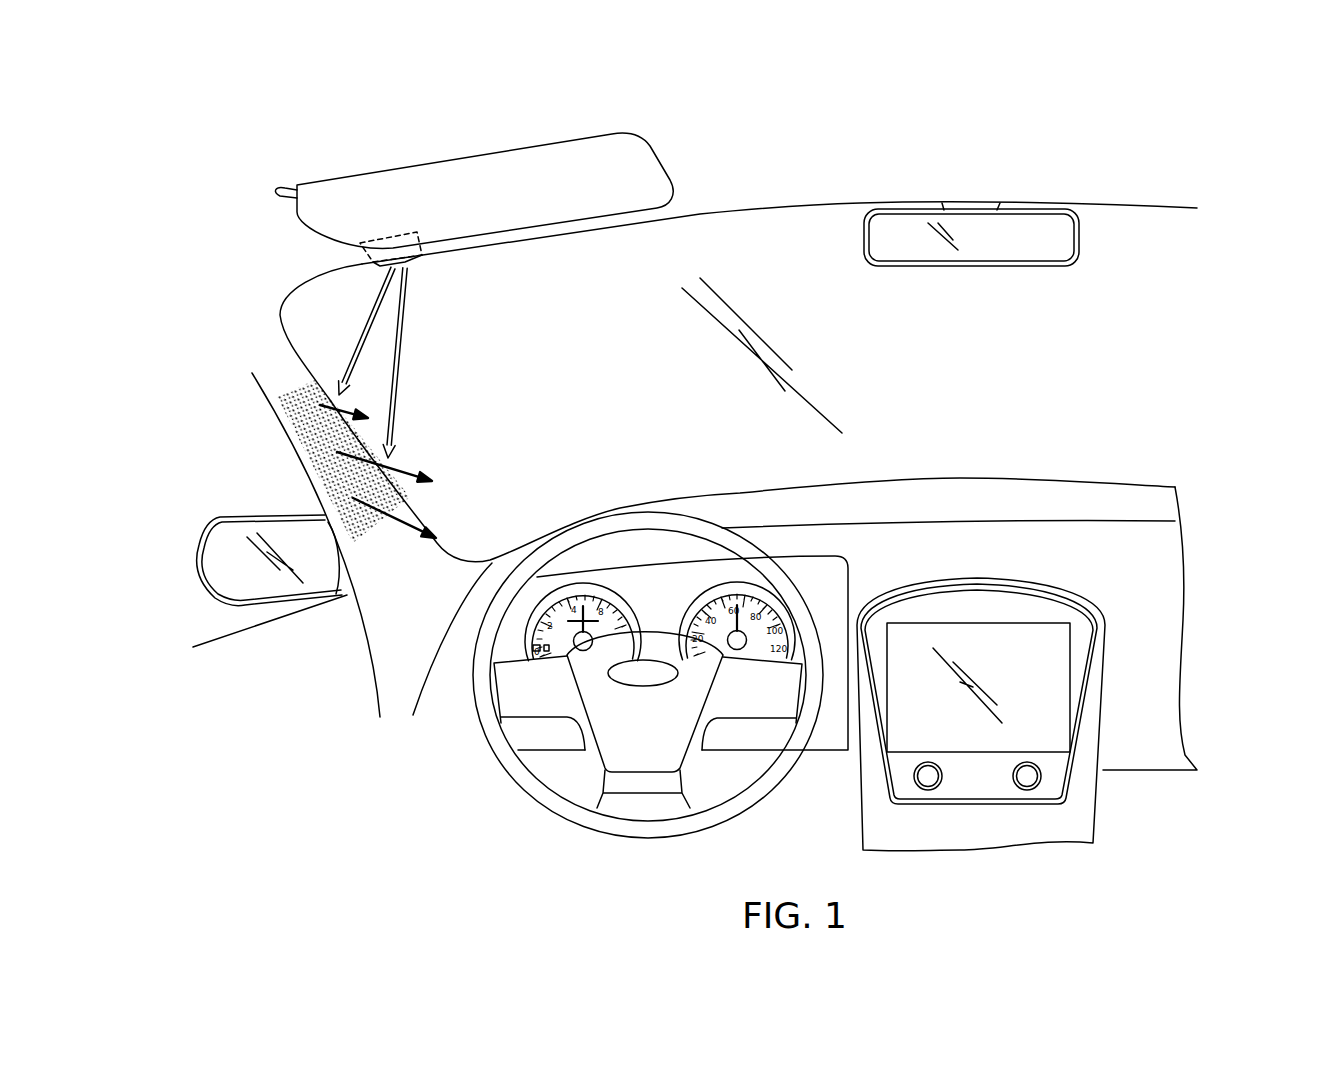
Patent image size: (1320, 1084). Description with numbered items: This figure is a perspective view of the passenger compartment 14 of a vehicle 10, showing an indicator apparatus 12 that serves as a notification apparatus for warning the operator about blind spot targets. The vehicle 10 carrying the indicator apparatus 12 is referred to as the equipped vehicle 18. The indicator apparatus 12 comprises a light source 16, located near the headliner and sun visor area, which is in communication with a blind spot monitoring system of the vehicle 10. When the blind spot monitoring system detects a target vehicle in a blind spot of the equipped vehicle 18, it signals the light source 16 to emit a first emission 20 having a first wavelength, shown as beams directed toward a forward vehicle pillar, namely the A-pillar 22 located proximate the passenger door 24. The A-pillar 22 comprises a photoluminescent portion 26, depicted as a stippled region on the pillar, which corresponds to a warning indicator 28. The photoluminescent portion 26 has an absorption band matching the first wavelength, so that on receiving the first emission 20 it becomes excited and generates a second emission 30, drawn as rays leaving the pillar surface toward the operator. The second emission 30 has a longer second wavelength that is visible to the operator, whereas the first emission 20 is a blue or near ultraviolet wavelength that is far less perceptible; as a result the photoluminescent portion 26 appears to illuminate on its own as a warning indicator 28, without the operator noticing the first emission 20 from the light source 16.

The vehicle 10 is at (798, 194).
The indicator apparatus 12 is at (215, 357).
The vehicle passenger compartment 14 is at (1080, 380).
The light source 16 is at (392, 226).
The equipped vehicle 18 is at (779, 233).
The first emission 20 is at (397, 372).
The A-pillar 22 is at (350, 461).
The passenger door 24 is at (237, 722).
The photoluminescent portion 26 is at (350, 461).
The warning indicator 28 is at (445, 502).
The second emission 30 is at (328, 400).